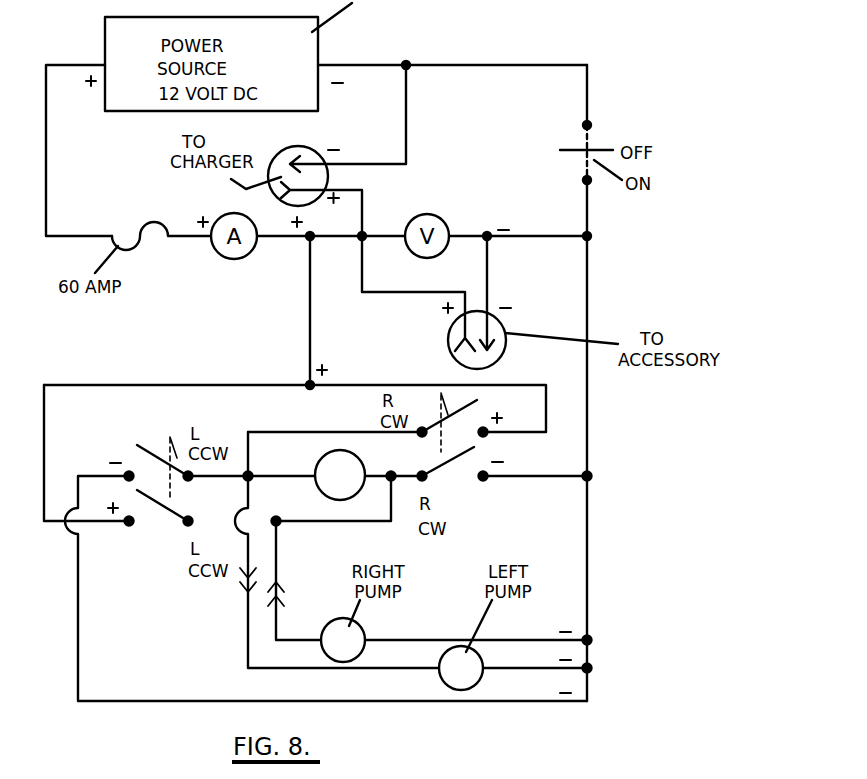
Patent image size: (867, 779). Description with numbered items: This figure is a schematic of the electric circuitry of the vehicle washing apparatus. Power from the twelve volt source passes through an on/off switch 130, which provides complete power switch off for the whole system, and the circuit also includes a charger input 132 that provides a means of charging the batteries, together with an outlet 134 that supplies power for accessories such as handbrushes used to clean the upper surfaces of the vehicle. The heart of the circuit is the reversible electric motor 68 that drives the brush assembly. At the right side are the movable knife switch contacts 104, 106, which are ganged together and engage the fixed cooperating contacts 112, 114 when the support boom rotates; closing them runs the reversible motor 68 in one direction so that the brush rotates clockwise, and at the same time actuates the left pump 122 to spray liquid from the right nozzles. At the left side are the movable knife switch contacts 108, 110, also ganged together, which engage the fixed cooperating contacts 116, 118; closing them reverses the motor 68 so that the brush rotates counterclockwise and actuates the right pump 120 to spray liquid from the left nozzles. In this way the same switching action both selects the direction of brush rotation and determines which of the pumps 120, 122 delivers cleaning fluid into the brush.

The reversible electric motor 68 is at (318, 487).
The movable knife switch contact 104 is at (476, 400).
The movable knife switch contact 106 is at (460, 456).
The movable knife switch contact 108 is at (152, 445).
The movable knife switch contact 110 is at (152, 500).
The fixed cooperating contact 112 is at (487, 437).
The fixed cooperating contact 114 is at (487, 481).
The fixed cooperating contact 116 is at (125, 470).
The fixed cooperating contact 118 is at (128, 527).
The right pump 120 is at (365, 633).
The left pump 122 is at (477, 658).
The on/off switch 130 is at (577, 160).
The charger input 132 is at (308, 152).
The outlet 134 is at (448, 339).